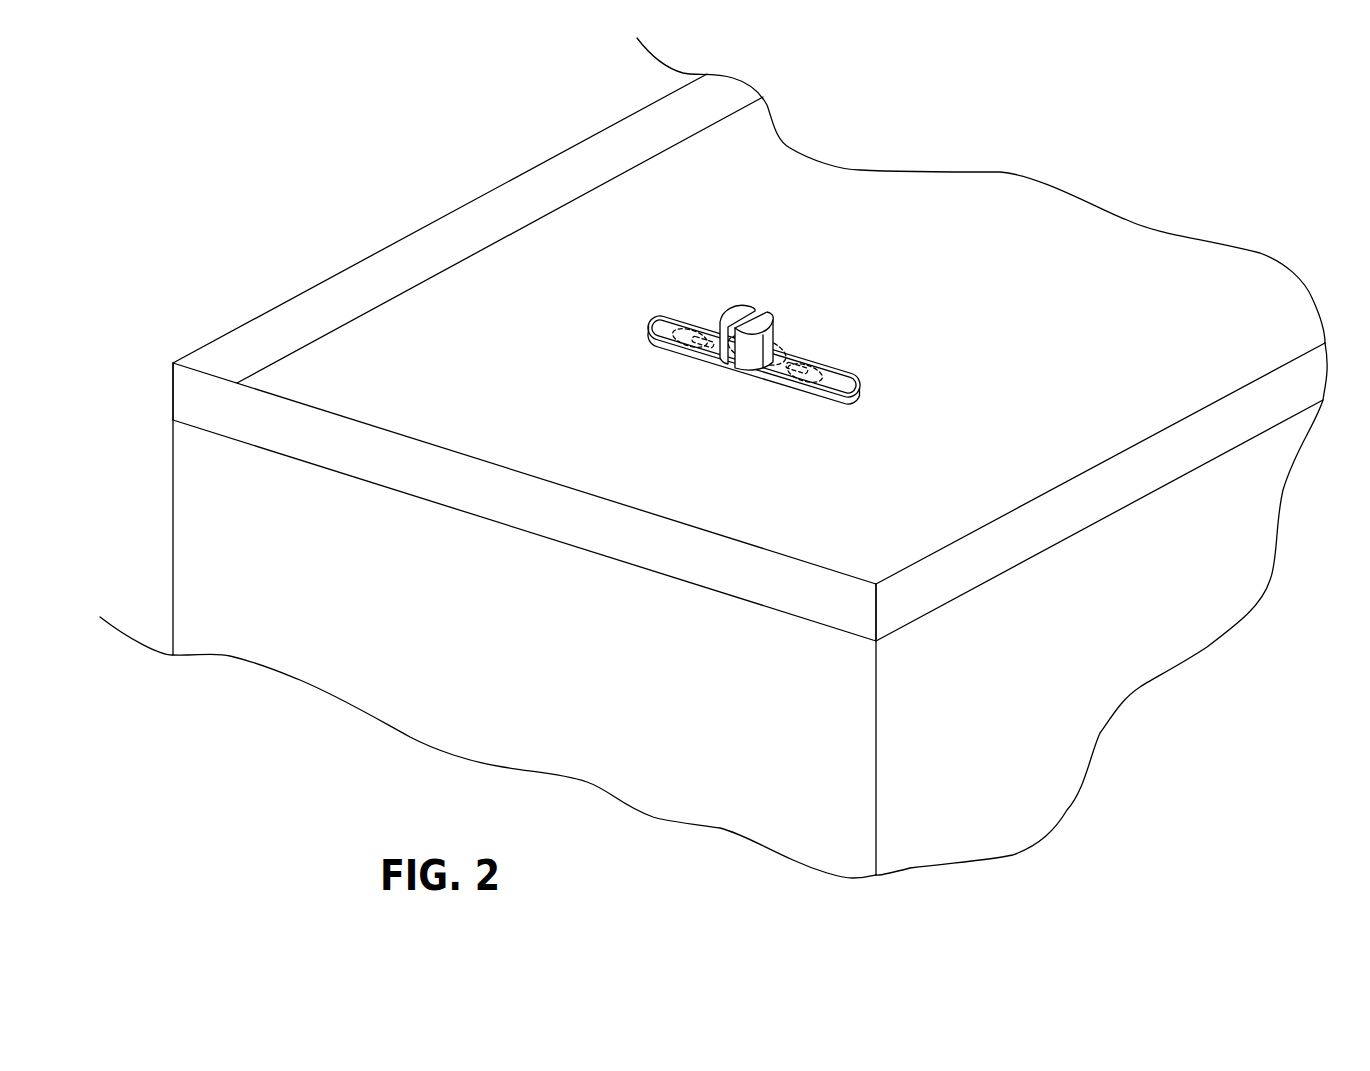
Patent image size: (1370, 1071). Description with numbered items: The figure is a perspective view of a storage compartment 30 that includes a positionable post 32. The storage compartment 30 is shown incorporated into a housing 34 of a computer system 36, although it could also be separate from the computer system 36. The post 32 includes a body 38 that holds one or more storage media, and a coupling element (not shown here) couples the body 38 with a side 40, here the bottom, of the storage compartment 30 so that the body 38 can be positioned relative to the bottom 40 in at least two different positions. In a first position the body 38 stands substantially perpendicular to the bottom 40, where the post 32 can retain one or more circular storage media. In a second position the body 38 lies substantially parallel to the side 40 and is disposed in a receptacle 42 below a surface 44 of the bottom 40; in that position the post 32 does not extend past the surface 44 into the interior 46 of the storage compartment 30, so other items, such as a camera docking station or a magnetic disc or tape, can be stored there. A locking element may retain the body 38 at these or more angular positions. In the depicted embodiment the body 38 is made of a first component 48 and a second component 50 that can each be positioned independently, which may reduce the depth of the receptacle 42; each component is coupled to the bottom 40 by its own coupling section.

The storage compartment 30 is at (207, 305).
The positionable post 32 is at (718, 305).
The housing 34 is at (173, 529).
The computer system 36 is at (1142, 187).
The body 38 is at (757, 282).
The side (bottom) 40 is at (381, 357).
The receptacle 42 is at (645, 326).
The surface 44 is at (884, 522).
The interior 46 is at (500, 285).
The first component 48 is at (820, 372).
The second component 50 is at (738, 305).